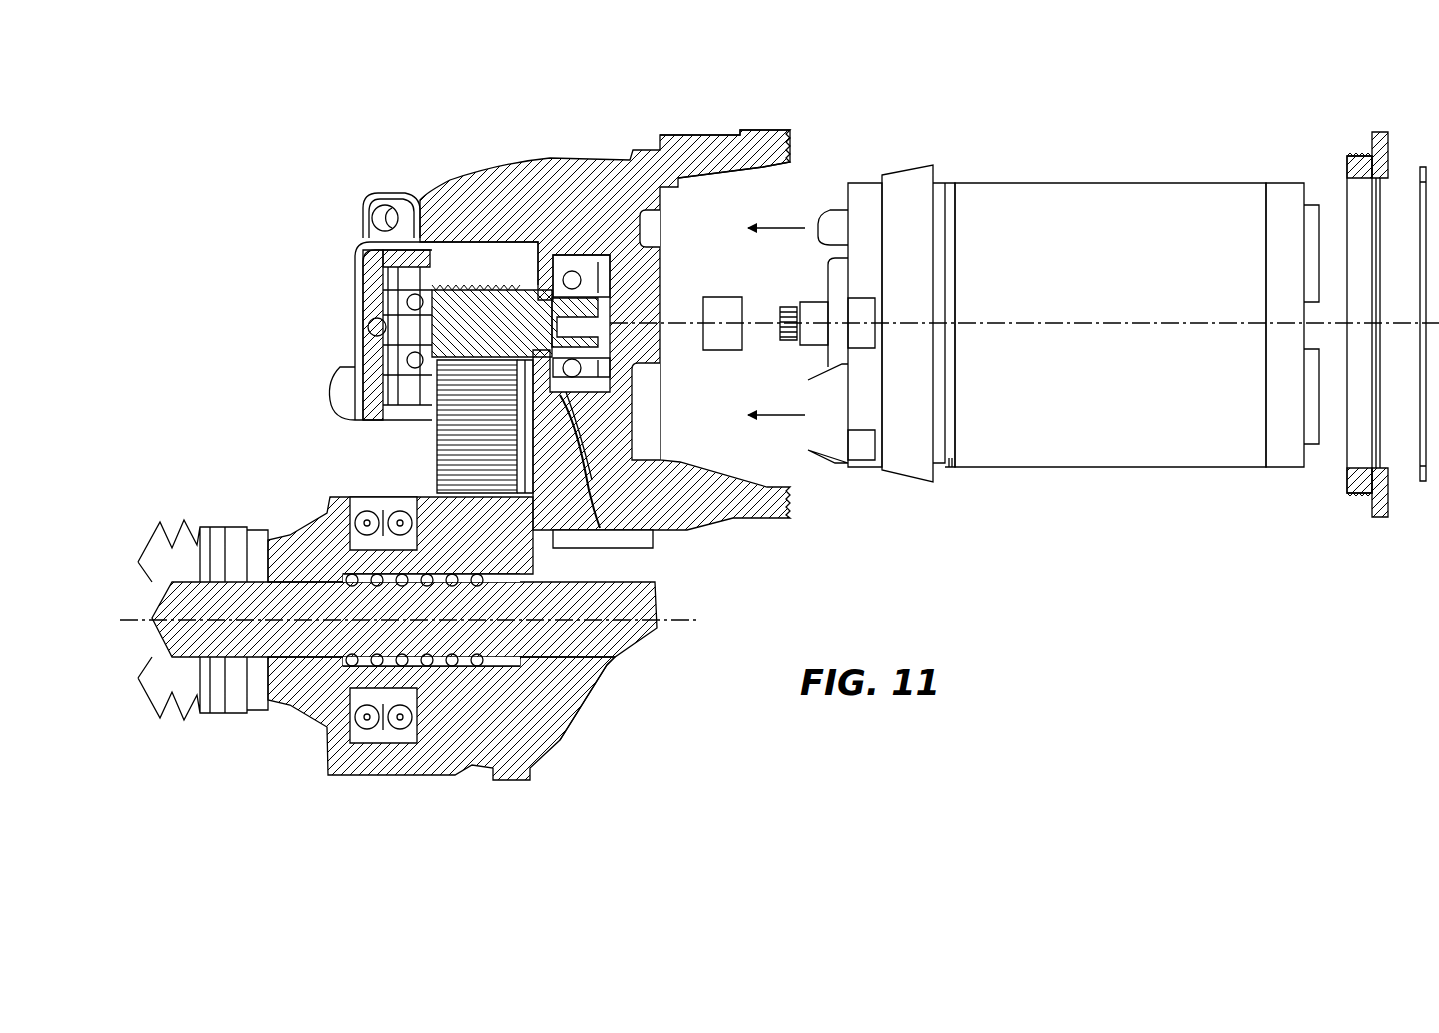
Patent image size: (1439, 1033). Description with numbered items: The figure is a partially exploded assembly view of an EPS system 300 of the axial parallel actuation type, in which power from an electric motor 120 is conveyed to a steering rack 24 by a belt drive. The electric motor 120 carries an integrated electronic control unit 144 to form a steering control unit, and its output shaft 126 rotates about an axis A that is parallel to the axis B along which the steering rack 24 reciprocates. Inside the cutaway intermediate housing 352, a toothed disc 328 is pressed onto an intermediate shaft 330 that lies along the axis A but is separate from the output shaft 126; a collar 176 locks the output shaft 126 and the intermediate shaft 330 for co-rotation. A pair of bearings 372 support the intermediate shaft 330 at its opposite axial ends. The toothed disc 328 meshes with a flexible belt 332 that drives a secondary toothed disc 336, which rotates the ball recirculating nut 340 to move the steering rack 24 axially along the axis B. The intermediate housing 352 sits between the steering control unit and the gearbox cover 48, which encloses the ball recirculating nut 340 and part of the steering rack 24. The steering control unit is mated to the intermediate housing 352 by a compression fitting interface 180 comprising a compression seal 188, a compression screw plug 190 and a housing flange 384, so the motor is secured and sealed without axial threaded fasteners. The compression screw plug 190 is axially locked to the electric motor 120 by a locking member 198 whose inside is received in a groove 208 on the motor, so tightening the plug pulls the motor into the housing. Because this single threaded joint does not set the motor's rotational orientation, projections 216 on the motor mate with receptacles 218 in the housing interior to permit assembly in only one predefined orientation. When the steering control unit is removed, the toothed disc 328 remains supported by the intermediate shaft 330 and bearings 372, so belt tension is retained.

The EPS system 300 is at (303, 188).
The intermediate housing 352 is at (560, 167).
The housing flange 384 is at (690, 122).
The receptacles 218 is at (650, 228).
The toothed disc 328 is at (430, 200).
The bearings 372 is at (363, 260).
The intermediate shaft 330 is at (473, 275).
The flexible belt 332 is at (410, 448).
The steering rack 24 is at (182, 633).
The axis B is at (222, 613).
The gearbox cover 48 is at (372, 776).
The secondary toothed disc 336 is at (540, 714).
The ball recirculating nut 340 is at (330, 740).
The collar 176 is at (723, 302).
The output shaft 126 is at (788, 342).
The compression fitting interface 180 is at (913, 135).
The projections 216 is at (820, 217).
The compression seal 188 is at (917, 238).
The groove 208 is at (950, 463).
The electric motor 120 is at (1147, 197).
The electronic control unit 144 is at (1286, 461).
The axis A is at (1121, 324).
The compression screw plug 190 is at (1353, 140).
The locking member 198 is at (1423, 150).